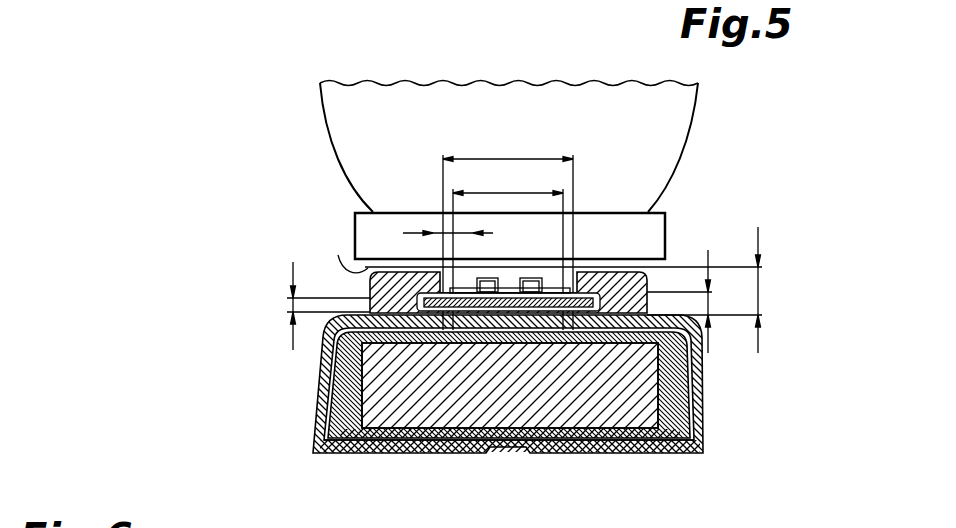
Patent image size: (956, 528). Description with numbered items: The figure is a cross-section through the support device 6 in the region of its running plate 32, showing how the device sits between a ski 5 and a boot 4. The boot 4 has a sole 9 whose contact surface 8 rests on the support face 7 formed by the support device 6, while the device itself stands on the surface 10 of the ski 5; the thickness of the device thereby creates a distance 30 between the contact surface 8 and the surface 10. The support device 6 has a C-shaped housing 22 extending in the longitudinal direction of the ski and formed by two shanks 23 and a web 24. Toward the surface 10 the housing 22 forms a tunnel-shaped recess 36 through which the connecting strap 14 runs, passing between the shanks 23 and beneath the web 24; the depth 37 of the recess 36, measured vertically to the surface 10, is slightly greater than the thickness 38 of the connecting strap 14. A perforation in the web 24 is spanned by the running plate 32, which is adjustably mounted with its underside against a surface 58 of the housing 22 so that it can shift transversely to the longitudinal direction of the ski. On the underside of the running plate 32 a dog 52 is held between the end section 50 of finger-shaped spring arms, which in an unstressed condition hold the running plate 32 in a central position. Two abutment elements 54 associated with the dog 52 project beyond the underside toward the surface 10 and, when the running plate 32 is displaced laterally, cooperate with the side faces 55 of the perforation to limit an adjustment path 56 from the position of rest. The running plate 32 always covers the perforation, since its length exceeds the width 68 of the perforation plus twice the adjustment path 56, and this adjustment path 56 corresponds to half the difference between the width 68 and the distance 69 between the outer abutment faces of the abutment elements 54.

The boot 4 is at (678, 130).
The ski 5 is at (728, 412).
The support device 6 is at (695, 252).
The support face 7 is at (603, 248).
The contact surface 8 is at (338, 255).
The sole 9 is at (640, 227).
The surface 10 is at (350, 304).
The connecting strap 14 is at (610, 335).
The housing 22 is at (318, 268).
The shanks 23 is at (697, 362).
The web 24 is at (655, 270).
The distance 30 is at (762, 300).
The running plate 32 is at (512, 288).
The tunnel-shaped recess 36 is at (625, 380).
The depth 37 is at (708, 298).
The thickness 38 is at (287, 306).
The end section 50 is at (548, 400).
The dog 52 is at (518, 300).
The abutment elements 54 is at (552, 290).
The side faces 55 is at (447, 290).
The adjustment path 56 is at (415, 228).
The surface 58 is at (627, 268).
The width 68 is at (505, 159).
The distance 69 is at (490, 193).